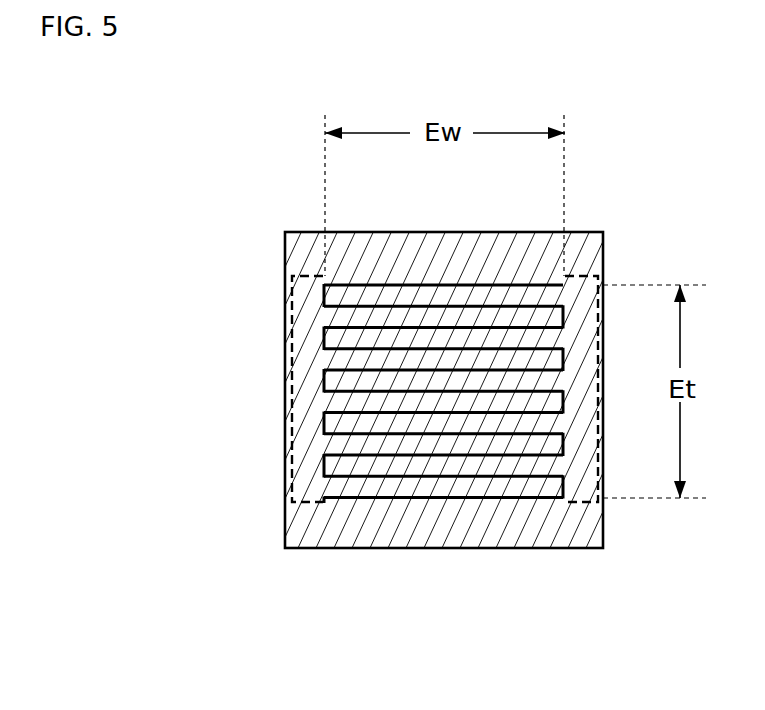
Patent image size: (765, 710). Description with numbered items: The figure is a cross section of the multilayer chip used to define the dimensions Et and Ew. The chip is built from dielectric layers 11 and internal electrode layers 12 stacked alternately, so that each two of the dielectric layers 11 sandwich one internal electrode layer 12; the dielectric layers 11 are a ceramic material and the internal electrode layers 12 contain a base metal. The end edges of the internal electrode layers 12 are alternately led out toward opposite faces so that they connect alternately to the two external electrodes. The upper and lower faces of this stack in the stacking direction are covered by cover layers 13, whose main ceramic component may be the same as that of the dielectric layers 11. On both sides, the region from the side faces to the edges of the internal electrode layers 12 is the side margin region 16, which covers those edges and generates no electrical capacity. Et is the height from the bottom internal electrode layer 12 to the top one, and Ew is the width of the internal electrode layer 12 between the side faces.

The dielectric layer 11 is at (510, 462).
The internal electrode layer 12 is at (410, 432).
The cover layer 13 is at (424, 245).
The side margin region 16 is at (310, 276).